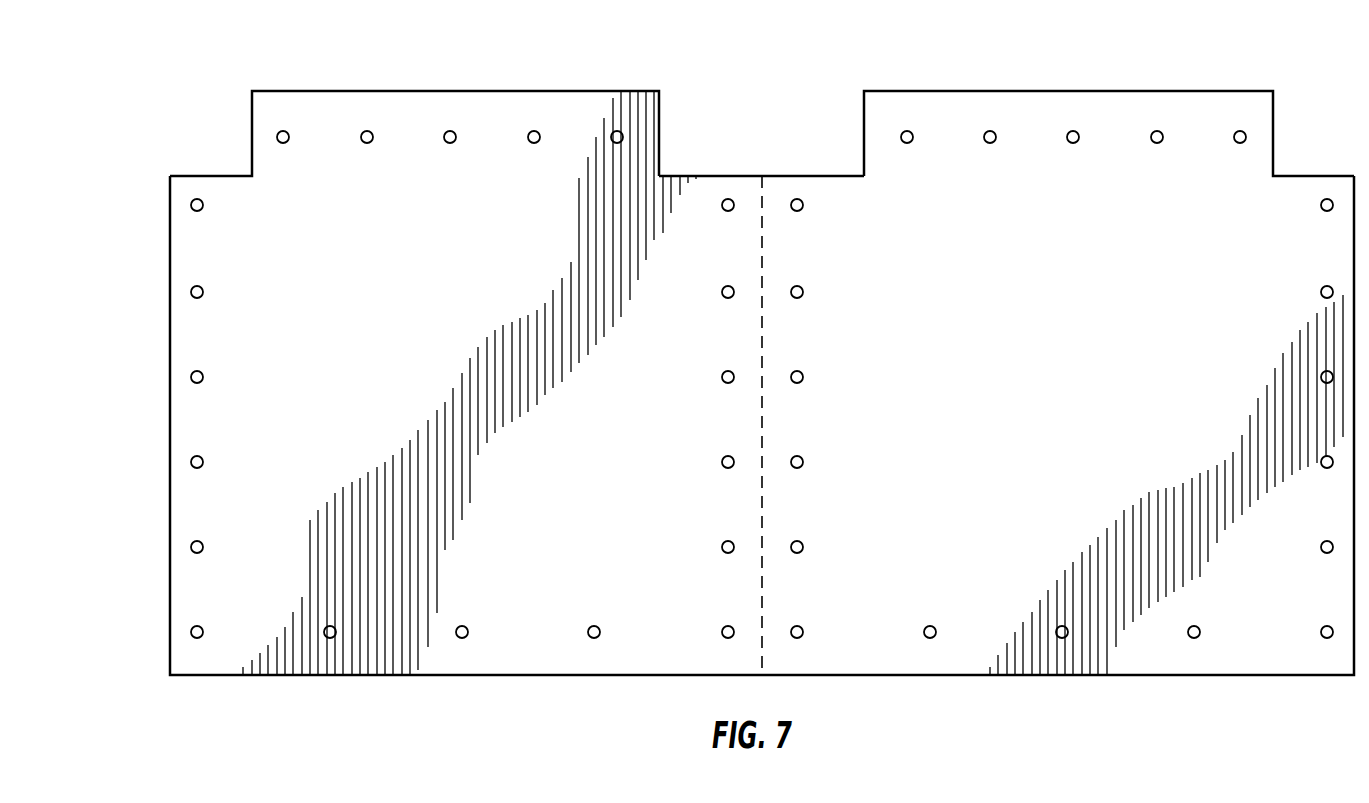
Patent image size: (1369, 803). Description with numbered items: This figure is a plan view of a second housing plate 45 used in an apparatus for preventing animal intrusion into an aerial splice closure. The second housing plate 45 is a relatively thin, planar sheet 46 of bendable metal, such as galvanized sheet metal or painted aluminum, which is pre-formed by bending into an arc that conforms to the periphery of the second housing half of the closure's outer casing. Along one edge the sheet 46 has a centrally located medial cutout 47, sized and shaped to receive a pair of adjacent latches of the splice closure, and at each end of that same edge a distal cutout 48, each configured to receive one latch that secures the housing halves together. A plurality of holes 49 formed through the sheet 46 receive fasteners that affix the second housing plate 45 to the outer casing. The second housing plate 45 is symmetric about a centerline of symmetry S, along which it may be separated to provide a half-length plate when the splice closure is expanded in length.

The second housing plate 45 is at (732, 382).
The sheet 46 is at (505, 652).
The medial cutout 47 is at (757, 95).
The distal cutout 48 is at (205, 118).
The holes 49 is at (192, 541).
The centerline of symmetry S is at (762, 505).